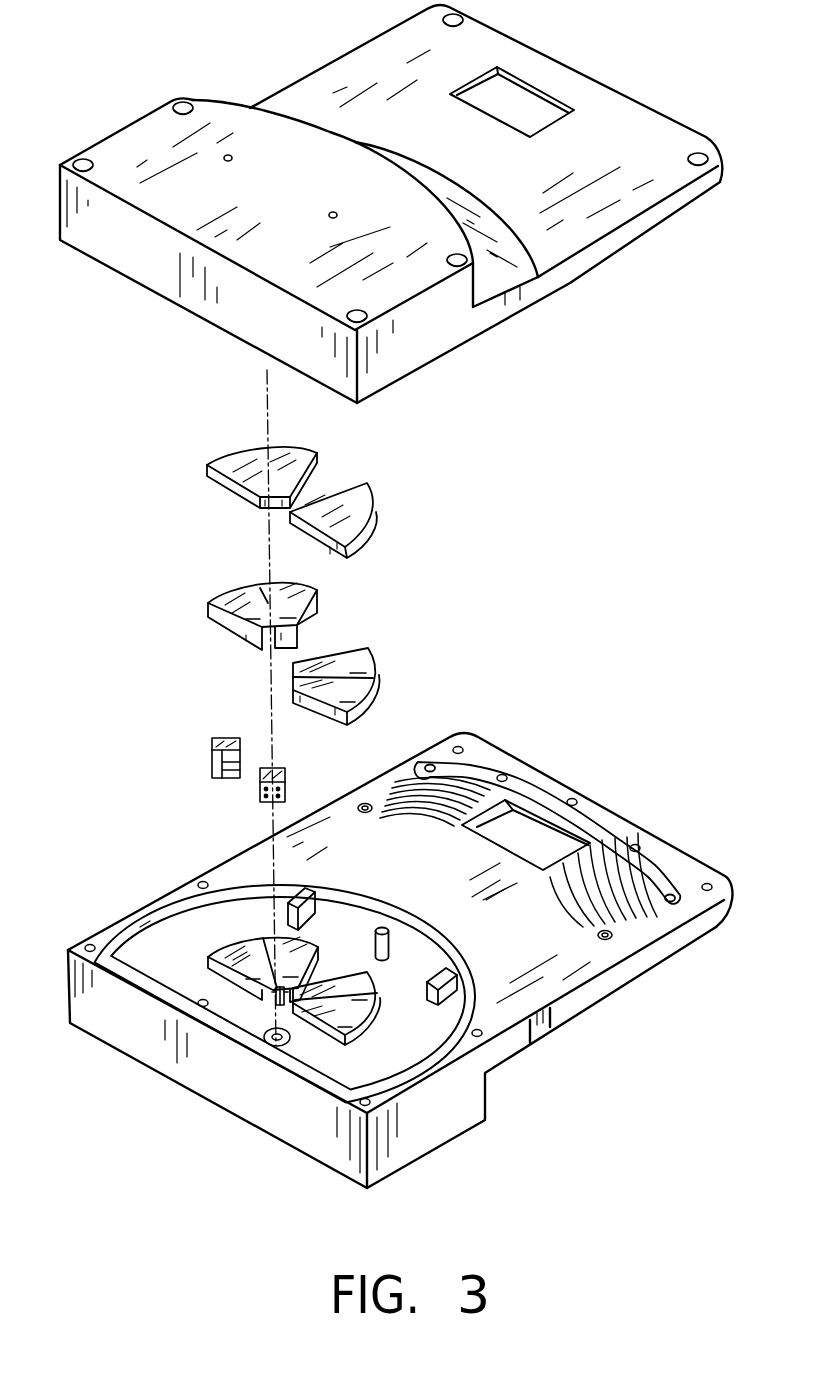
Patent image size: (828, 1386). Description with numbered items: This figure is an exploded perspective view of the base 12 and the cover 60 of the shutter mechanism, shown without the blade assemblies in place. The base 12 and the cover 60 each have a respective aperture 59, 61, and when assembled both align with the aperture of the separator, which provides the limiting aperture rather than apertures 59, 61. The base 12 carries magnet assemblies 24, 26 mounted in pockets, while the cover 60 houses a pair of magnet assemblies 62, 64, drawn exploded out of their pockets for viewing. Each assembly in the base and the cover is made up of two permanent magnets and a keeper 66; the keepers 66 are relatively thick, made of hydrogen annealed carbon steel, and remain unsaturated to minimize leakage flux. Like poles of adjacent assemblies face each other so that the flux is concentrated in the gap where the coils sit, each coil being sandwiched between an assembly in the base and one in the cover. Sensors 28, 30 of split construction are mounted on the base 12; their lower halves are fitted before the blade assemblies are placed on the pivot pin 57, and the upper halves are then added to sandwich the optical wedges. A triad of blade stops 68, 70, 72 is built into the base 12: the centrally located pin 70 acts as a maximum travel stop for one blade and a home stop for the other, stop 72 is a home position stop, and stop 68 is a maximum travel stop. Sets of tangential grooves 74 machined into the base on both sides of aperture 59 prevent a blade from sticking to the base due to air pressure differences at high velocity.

The base 12 is at (123, 1036).
The magnet assembly 24 is at (380, 1010).
The magnet assembly 26 is at (229, 953).
The sensor 28 is at (212, 770).
The sensor 30 is at (260, 803).
The pivot pin 57 is at (275, 1002).
The aperture 59 is at (530, 797).
The cover 60 is at (133, 138).
The aperture 61 is at (537, 72).
The magnet assembly 62 is at (190, 507).
The magnet assembly 64 is at (405, 530).
The keeper 66 is at (237, 460).
The blade stop 68 is at (446, 968).
The blade stop 70 is at (386, 926).
The blade stop 72 is at (312, 908).
The tangential grooves 74 is at (405, 790).